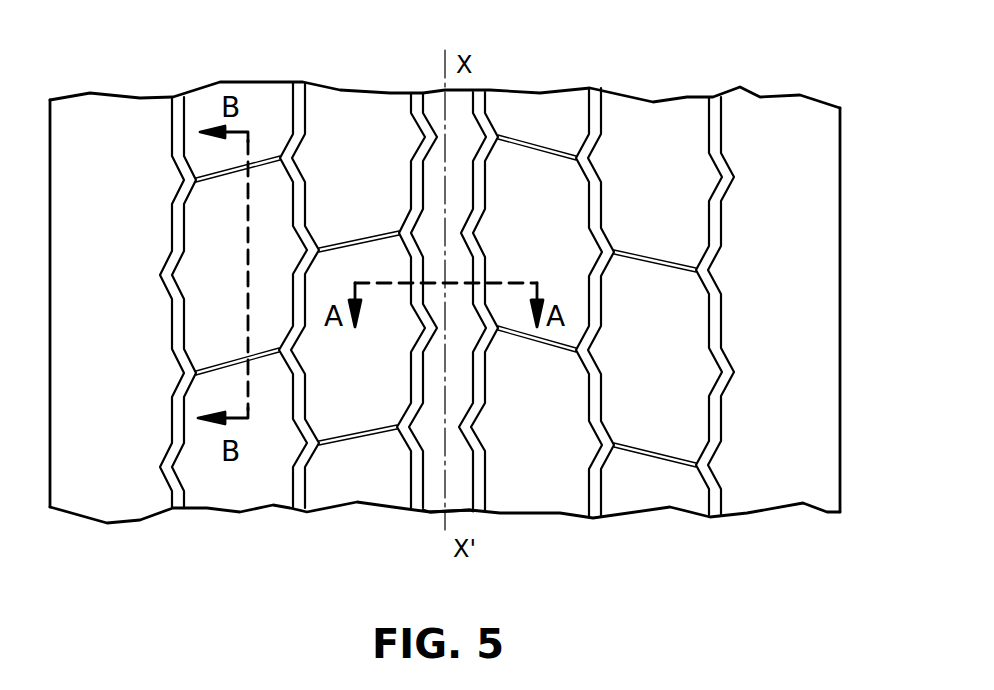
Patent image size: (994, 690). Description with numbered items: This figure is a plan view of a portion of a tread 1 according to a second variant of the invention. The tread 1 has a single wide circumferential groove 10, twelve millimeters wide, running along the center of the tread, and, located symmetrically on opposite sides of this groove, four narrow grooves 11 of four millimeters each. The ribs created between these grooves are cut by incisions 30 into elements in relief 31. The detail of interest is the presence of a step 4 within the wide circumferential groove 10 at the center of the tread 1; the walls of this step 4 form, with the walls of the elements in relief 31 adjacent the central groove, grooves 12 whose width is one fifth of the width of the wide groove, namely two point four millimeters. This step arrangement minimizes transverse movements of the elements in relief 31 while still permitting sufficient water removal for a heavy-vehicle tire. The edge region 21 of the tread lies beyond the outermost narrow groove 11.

The tread 1 is at (90, 107).
The second shoulder rib 21 is at (807, 125).
The wide circumferential groove 10 is at (488, 40).
The grooves 12 is at (417, 97).
The step 4 is at (433, 493).
The narrow grooves 11 is at (297, 500).
The incisions 30 is at (540, 145).
The elements in relief 31 is at (229, 276).